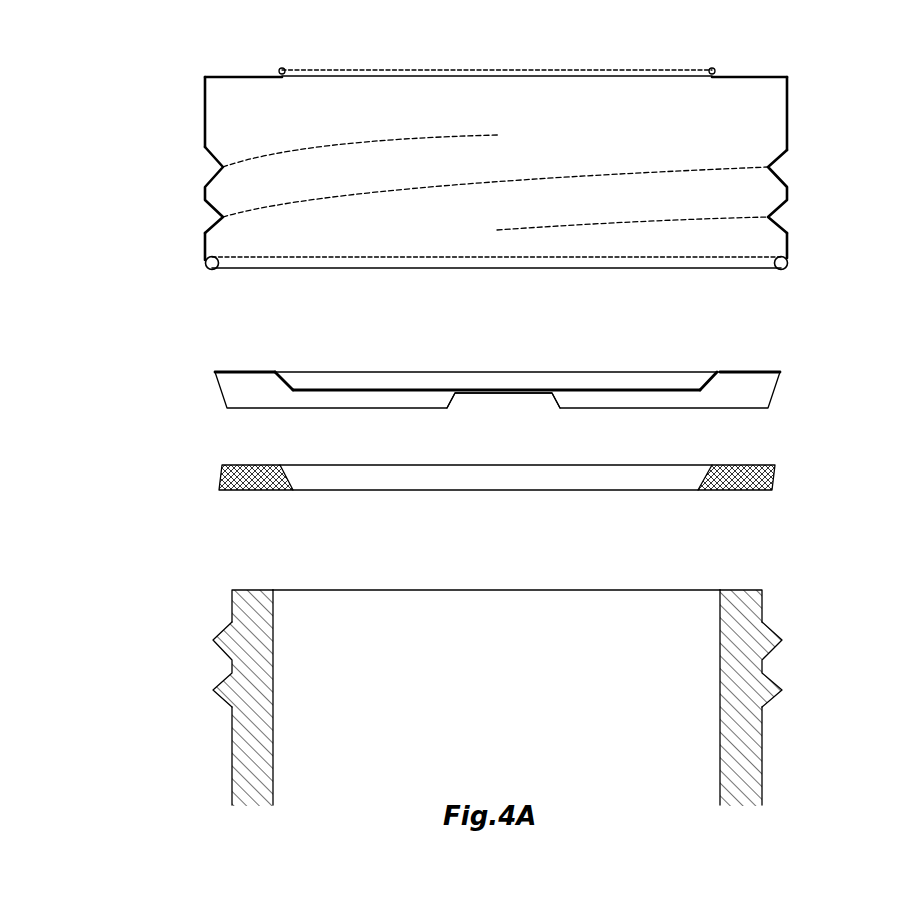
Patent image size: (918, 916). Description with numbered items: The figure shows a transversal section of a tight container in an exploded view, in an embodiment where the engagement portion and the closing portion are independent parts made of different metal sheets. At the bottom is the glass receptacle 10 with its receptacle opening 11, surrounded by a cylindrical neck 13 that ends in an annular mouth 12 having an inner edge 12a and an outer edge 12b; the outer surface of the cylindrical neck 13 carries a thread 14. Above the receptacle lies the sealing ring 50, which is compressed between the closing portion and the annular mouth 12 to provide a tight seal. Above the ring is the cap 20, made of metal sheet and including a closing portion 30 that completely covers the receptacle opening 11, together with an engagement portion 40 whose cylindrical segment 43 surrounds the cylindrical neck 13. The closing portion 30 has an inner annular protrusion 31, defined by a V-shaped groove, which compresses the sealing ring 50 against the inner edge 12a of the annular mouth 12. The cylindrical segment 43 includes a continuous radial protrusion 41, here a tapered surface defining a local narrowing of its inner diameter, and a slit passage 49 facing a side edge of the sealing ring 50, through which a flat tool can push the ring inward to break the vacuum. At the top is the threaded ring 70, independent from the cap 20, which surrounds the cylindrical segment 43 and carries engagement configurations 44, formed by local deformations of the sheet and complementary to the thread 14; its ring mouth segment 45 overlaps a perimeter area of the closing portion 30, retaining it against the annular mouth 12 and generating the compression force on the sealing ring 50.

The threaded ring 70 is at (210, 38).
The ring mouth segment 45 is at (240, 74).
The engagement configurations 44 is at (222, 170).
The cap 20 is at (210, 350).
The engagement portion 40 is at (92, 372).
The cylindrical segment 43 is at (145, 372).
The radial protrusion 41 is at (215, 388).
The closing portion 30 is at (445, 390).
The inner annular protrusion 31 is at (290, 383).
The slit passage 49 is at (455, 395).
The sealing ring 50 is at (262, 480).
The glass receptacle 10 is at (212, 746).
The receptacle opening 11 is at (463, 590).
The annular mouth 12 is at (250, 590).
The inner edge 12a is at (273, 590).
The outer edge 12b is at (232, 590).
The cylindrical neck 13 is at (232, 605).
The thread 14 is at (213, 640).